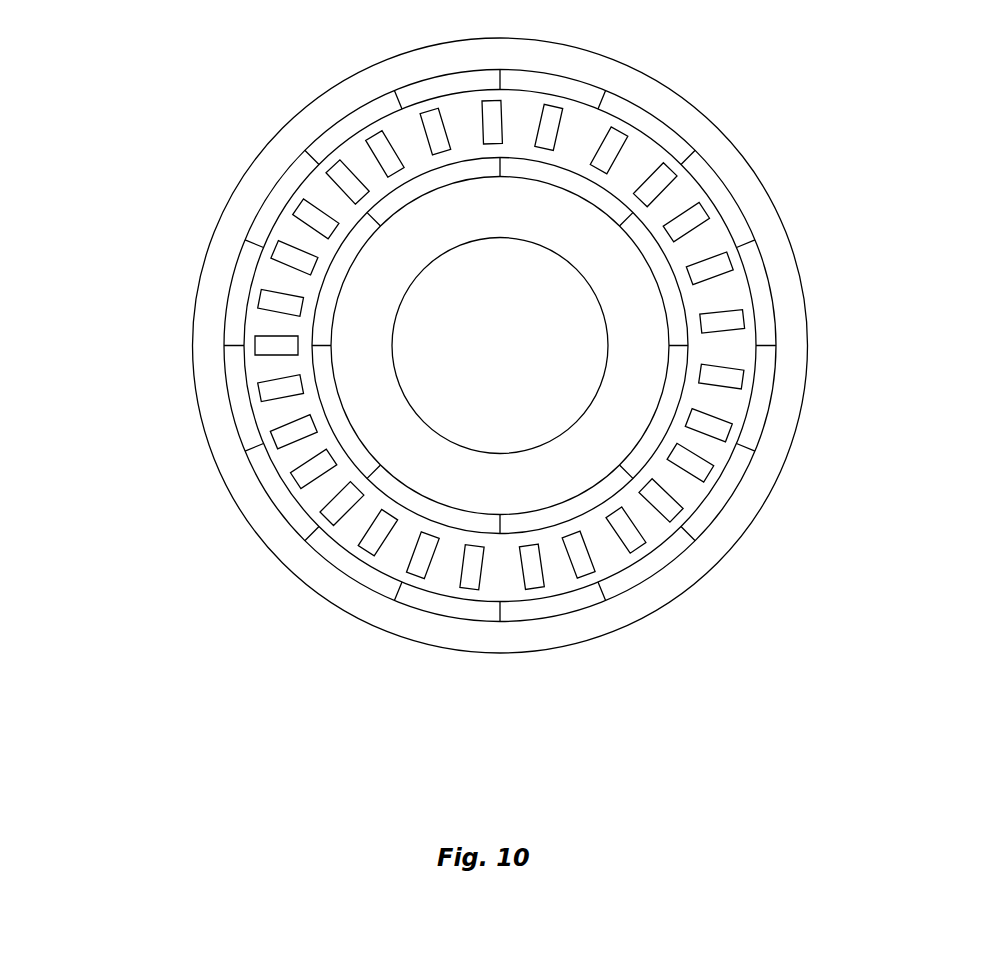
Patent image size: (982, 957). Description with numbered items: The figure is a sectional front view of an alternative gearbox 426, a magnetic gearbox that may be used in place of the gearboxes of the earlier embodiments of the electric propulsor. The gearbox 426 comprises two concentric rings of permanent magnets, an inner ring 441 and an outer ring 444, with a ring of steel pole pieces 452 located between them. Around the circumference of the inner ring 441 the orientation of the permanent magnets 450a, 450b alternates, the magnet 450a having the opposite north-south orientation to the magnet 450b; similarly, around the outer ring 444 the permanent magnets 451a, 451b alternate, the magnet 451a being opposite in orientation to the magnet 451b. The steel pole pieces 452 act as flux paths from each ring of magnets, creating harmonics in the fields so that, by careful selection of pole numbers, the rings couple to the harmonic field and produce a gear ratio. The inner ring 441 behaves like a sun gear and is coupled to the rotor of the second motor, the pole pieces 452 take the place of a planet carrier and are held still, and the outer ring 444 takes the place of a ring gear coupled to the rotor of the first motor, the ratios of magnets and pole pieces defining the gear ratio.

The gearbox 426 is at (240, 652).
The inner ring 441 is at (558, 465).
The outer ring 444 is at (212, 278).
The permanent magnet 450a is at (443, 512).
The permanent magnet 450b is at (532, 525).
The permanent magnet 451a is at (285, 187).
The permanent magnet 451b is at (365, 122).
The steel pole pieces 452 is at (668, 168).